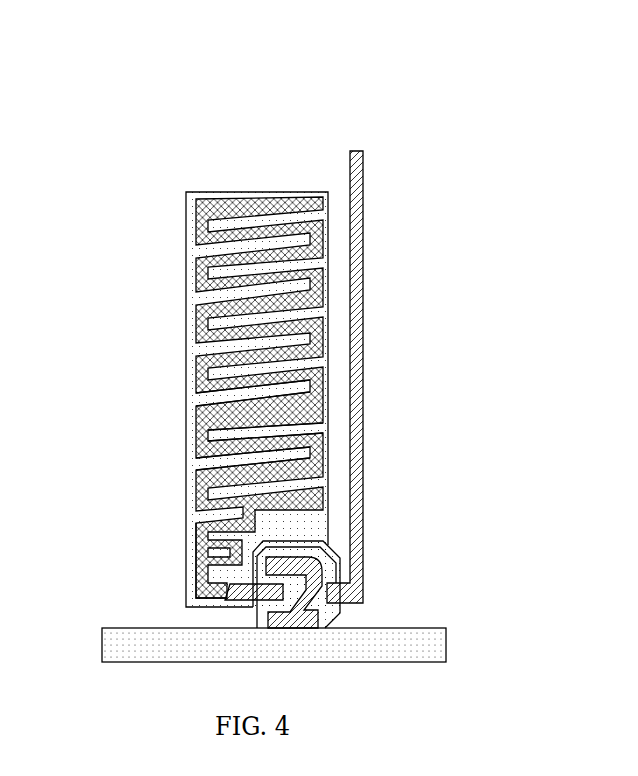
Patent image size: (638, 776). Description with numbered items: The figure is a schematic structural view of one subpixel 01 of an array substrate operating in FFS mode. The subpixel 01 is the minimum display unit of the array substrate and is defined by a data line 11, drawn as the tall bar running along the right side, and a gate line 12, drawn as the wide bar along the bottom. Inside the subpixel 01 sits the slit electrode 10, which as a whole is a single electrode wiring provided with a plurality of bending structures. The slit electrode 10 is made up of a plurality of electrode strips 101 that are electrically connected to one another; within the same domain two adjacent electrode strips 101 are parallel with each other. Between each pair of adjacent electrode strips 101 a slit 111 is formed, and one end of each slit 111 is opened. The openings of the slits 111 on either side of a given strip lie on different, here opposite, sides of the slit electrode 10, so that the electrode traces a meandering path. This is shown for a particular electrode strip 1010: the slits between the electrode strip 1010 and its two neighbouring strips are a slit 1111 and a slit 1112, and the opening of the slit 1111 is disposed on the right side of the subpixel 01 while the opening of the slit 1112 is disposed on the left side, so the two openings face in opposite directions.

The subpixel 01 is at (264, 53).
The slit electrode 10 is at (189, 370).
The electrode strip 101 is at (180, 355).
The slit 1111 is at (278, 430).
The electrode strip 1010 is at (237, 428).
The slit 1112 is at (265, 443).
The slit 111 is at (210, 582).
The data line 11 is at (353, 405).
The gate line 12 is at (367, 648).